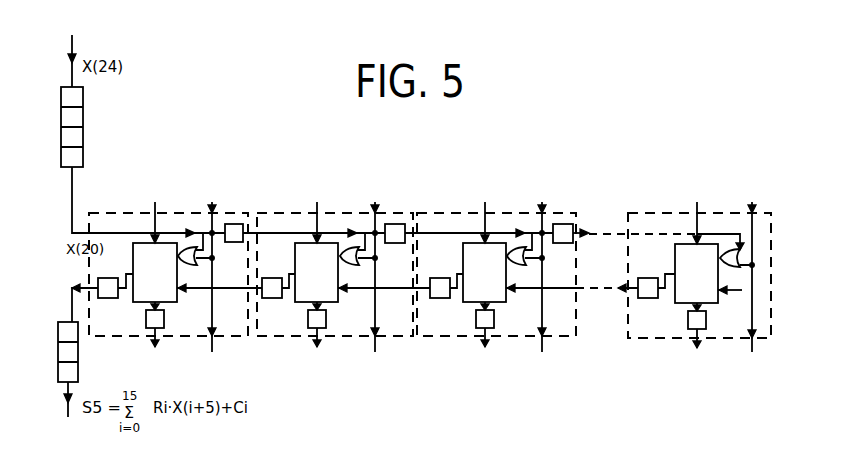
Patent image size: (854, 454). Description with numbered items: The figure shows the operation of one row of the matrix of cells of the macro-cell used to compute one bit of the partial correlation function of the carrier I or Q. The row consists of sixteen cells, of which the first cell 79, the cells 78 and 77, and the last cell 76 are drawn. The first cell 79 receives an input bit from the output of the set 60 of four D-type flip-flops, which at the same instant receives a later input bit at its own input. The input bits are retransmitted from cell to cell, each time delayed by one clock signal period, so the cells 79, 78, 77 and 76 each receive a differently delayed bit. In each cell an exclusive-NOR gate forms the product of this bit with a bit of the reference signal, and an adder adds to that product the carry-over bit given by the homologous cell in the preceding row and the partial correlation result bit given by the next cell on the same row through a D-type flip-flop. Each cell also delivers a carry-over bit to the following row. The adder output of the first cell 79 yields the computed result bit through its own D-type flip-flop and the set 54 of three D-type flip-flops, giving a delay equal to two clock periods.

The set of four D-type flip-flops 60 is at (83, 130).
The set of three D-type flip-flops 54 is at (78, 345).
The first cell 79 is at (121, 213).
The cell 78 is at (290, 213).
The cell 77 is at (449, 213).
The cell 76 is at (672, 213).